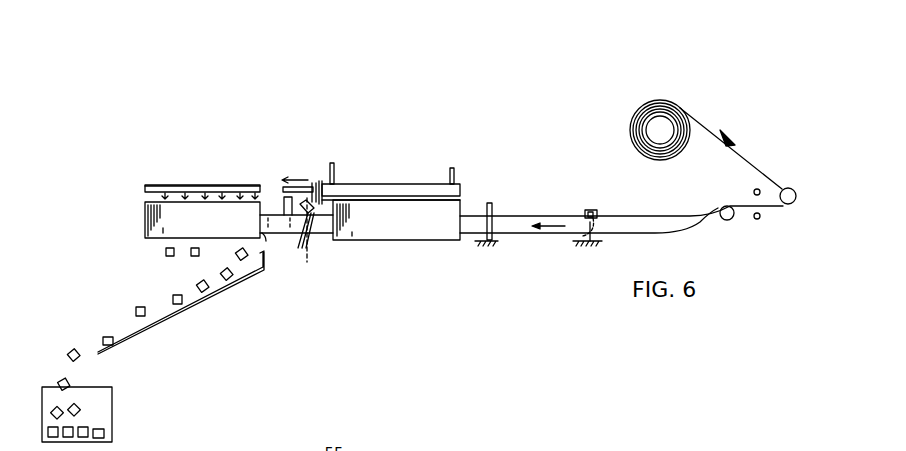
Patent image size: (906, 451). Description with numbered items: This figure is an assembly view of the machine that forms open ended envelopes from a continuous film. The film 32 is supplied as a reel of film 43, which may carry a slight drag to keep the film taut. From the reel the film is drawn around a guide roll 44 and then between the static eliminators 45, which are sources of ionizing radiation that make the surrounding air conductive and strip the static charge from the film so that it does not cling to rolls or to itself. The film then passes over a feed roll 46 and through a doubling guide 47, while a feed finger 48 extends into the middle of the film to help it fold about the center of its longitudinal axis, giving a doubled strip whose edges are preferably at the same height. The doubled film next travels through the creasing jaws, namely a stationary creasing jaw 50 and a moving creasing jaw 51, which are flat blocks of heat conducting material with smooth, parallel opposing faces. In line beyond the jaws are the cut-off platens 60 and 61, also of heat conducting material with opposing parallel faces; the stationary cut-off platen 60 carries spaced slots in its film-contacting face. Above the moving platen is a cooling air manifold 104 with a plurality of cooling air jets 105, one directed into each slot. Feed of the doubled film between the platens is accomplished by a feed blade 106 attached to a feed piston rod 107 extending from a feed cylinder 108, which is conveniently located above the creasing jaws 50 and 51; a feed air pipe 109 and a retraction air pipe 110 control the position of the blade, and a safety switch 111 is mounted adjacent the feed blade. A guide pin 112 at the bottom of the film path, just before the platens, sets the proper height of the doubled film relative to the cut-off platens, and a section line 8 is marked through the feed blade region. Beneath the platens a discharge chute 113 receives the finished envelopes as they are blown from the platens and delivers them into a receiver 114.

The section line 8- 8 is at (319, 154).
The film 32 is at (757, 156).
The reel of film 43 is at (671, 103).
The guide roll 44 is at (796, 189).
The static eliminators 45 is at (754, 189).
The feed roll 46 is at (729, 221).
The doubling guide 47 is at (493, 208).
The feed finger 48 is at (593, 209).
The stationary creasing jaw 50 is at (439, 191).
The moving creasing jaw 51 is at (461, 200).
The stationary cut-off platen 60 is at (157, 220).
The cut-off platen 61 is at (145, 214).
The cooling air manifold 104 is at (203, 185).
The cooling air jets 105 is at (160, 186).
The feed blade 106 is at (284, 198).
The feed piston rod 107 is at (299, 195).
The feed cylinder 108 is at (422, 184).
The feed air pipe 109 is at (335, 173).
The retraction air pipe 110 is at (453, 167).
The safety switch 111 is at (300, 245).
The guide pin 112 is at (278, 244).
The discharge chute 113 is at (182, 314).
The receiver 114 is at (113, 410).